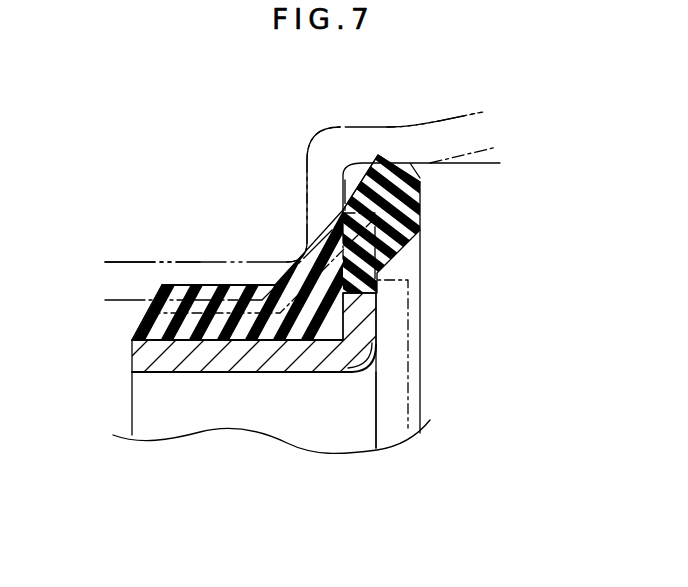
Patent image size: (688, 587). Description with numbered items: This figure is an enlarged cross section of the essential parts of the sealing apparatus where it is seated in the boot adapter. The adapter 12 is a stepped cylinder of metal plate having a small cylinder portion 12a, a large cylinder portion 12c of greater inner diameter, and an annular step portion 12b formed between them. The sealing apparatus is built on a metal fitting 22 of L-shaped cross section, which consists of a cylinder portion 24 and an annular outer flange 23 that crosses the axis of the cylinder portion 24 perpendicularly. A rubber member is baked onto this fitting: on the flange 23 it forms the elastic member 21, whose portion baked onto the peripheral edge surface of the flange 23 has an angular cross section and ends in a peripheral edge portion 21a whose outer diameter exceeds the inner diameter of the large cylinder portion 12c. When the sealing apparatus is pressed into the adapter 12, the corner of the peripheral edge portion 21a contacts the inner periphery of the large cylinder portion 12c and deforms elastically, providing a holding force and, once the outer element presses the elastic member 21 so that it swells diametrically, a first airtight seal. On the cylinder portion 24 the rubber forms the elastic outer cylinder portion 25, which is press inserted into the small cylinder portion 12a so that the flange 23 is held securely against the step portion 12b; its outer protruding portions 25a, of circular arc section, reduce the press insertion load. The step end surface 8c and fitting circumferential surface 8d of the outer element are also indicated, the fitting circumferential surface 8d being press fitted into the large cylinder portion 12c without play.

The step end surface 8c is at (408, 266).
The fitting circumferential surface 8d is at (489, 164).
The adapter 12 is at (263, 243).
The small cylinder portion 12a is at (150, 262).
The annular step portion 12b is at (305, 185).
The large cylinder portion 12c is at (420, 127).
The elastic member 21 is at (425, 216).
The peripheral edge portion 21a is at (384, 155).
The metal fitting 22 is at (359, 378).
The annular outer flange 23 is at (367, 308).
The cylinder portion 24 is at (243, 372).
The elastic outer cylinder portion 25 is at (132, 332).
The protruding portions 25a is at (192, 292).